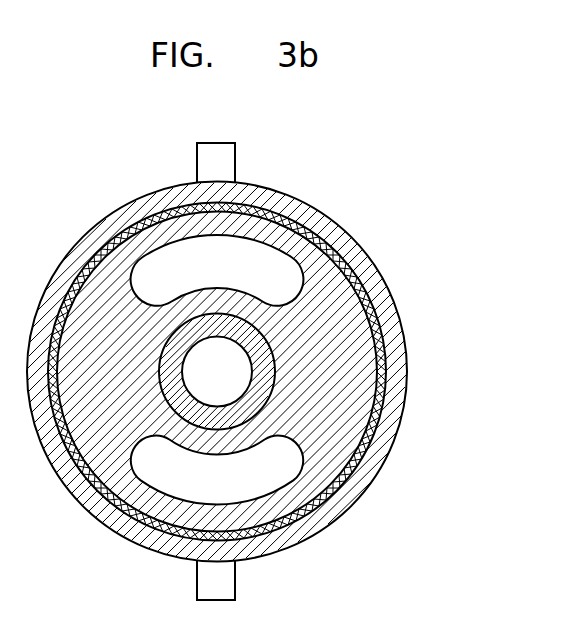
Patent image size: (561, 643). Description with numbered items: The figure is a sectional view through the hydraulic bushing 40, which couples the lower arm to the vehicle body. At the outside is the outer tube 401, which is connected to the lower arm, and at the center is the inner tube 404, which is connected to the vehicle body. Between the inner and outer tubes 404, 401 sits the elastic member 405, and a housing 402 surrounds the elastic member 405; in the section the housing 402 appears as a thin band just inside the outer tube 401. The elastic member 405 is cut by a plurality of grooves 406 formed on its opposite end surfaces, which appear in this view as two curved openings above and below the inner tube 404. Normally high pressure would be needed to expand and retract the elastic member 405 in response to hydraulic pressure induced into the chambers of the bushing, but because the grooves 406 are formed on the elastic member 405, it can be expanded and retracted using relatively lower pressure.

The hydraulic bushing 40 is at (329, 178).
The outer tube 401 is at (367, 270).
The housing 402 is at (383, 330).
The inner tube 404 is at (257, 398).
The elastic member 405 is at (363, 387).
The grooves 406 is at (283, 267).